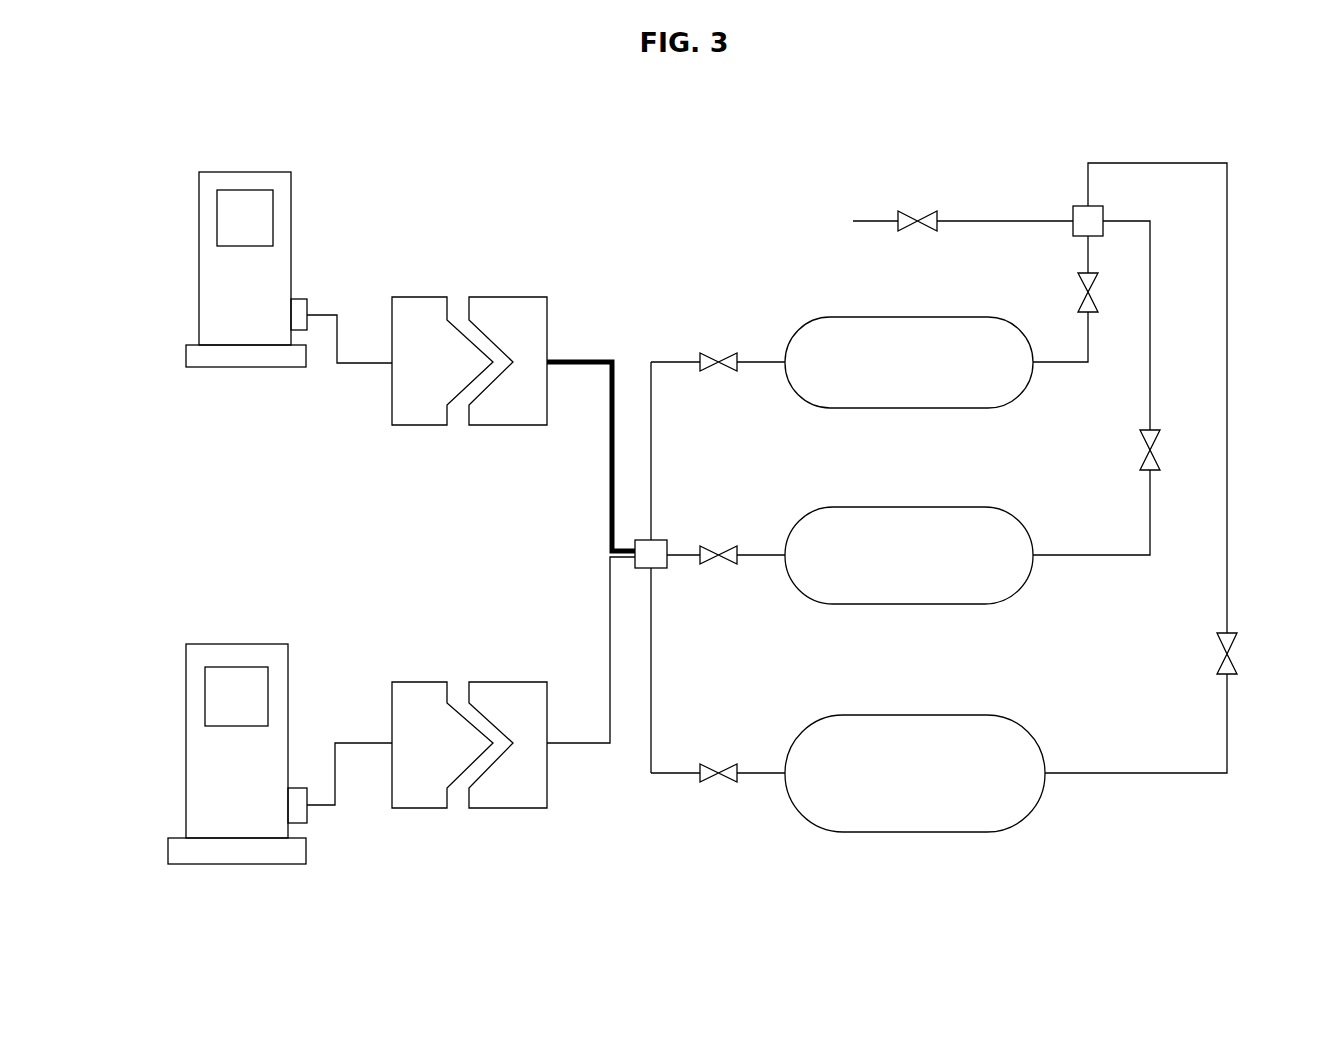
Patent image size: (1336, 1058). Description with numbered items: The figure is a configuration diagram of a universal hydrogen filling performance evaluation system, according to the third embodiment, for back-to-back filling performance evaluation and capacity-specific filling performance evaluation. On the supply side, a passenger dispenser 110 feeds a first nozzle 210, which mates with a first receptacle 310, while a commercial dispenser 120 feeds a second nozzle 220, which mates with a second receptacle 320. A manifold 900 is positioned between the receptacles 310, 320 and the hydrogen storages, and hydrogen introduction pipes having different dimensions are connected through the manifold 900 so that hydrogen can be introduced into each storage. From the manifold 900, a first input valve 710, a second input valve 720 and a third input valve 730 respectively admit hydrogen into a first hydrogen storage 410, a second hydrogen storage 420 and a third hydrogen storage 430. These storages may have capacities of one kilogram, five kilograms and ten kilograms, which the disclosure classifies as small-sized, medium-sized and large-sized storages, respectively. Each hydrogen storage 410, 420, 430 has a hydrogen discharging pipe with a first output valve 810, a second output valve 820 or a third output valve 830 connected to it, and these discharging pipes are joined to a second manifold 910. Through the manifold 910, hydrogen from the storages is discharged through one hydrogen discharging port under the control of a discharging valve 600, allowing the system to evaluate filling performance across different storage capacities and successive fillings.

The passenger dispenser 110 is at (237, 172).
The commercial dispenser 120 is at (233, 644).
The first nozzle 210 is at (416, 297).
The second nozzle 220 is at (417, 682).
The first receptacle 310 is at (512, 297).
The second receptacle 320 is at (511, 682).
The first hydrogen storage 410 is at (912, 408).
The second hydrogen storage 420 is at (905, 604).
The third hydrogen storage 430 is at (1038, 808).
The discharging valve 600 is at (896, 231).
The first input valve 710 is at (724, 372).
The second input valve 720 is at (737, 566).
The third input valve 730 is at (724, 784).
The first output valve 810 is at (1097, 313).
The second output valve 820 is at (1158, 471).
The third output valve 830 is at (1222, 676).
The manifold 900 is at (667, 568).
The manifold 910 is at (1078, 206).